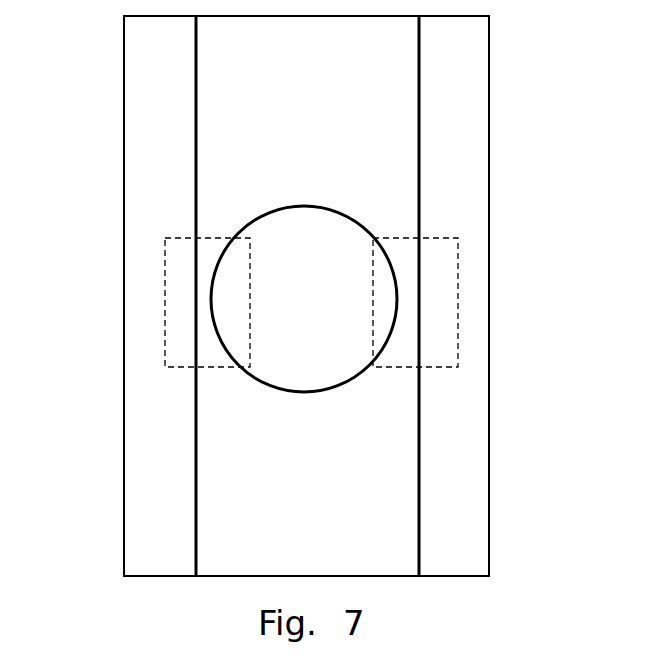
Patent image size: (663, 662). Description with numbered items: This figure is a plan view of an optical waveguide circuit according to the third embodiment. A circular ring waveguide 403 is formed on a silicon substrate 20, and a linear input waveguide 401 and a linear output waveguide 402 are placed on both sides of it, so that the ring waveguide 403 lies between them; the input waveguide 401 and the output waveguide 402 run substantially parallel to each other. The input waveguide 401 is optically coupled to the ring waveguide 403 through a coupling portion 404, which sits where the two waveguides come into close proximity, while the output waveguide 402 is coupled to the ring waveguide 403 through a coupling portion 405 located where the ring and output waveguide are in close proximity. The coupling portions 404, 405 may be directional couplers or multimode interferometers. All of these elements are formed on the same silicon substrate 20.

The silicon substrate 20 is at (134, 501).
The input waveguide 401 is at (422, 97).
The output waveguide 402 is at (193, 75).
The ring waveguide 403 is at (248, 222).
The coupling portion 404 is at (458, 287).
The coupling portion 405 is at (164, 298).